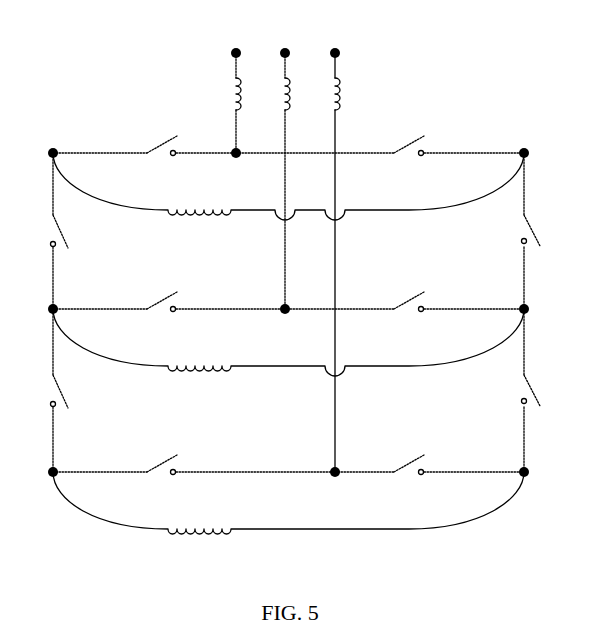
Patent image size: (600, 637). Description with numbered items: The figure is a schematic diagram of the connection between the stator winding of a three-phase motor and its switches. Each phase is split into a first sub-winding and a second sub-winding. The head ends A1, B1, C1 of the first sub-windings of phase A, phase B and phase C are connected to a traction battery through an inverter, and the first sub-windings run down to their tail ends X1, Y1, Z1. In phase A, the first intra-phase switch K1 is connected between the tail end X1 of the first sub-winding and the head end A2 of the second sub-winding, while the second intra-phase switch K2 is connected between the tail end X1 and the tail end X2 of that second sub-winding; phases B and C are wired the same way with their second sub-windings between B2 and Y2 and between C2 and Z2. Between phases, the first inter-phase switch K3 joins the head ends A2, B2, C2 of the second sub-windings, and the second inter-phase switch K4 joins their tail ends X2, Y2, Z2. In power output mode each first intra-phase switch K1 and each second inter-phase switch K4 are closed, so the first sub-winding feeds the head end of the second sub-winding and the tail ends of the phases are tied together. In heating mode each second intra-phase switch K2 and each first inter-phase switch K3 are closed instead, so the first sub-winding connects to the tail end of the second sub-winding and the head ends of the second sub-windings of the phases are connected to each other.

The head end of first sub-winding of phase A A1 is at (235, 86).
The head end of first sub-winding of phase B B1 is at (285, 164).
The head end of first sub-winding of phase C C1 is at (335, 245).
The tail end of first sub-winding of phase A X1 is at (236, 169).
The tail end of first sub-winding of phase B Y1 is at (286, 325).
The tail end of first sub-winding of phase C Z1 is at (340, 488).
The head end of second sub-winding of phase A A2 is at (34, 153).
The head end of second sub-winding of phase B B2 is at (34, 309).
The head end of second sub-winding of phase C C2 is at (34, 472).
The tail end of second sub-winding of phase A X2 is at (545, 153).
The tail end of second sub-winding of phase B Y2 is at (545, 309).
The tail end of second sub-winding of phase C Z2 is at (544, 472).
The first intra-phase switch K1 is at (149, 319).
The second intra-phase switch K2 is at (395, 322).
The first inter-phase switch K3 is at (76, 325).
The second inter-phase switch K4 is at (515, 321).